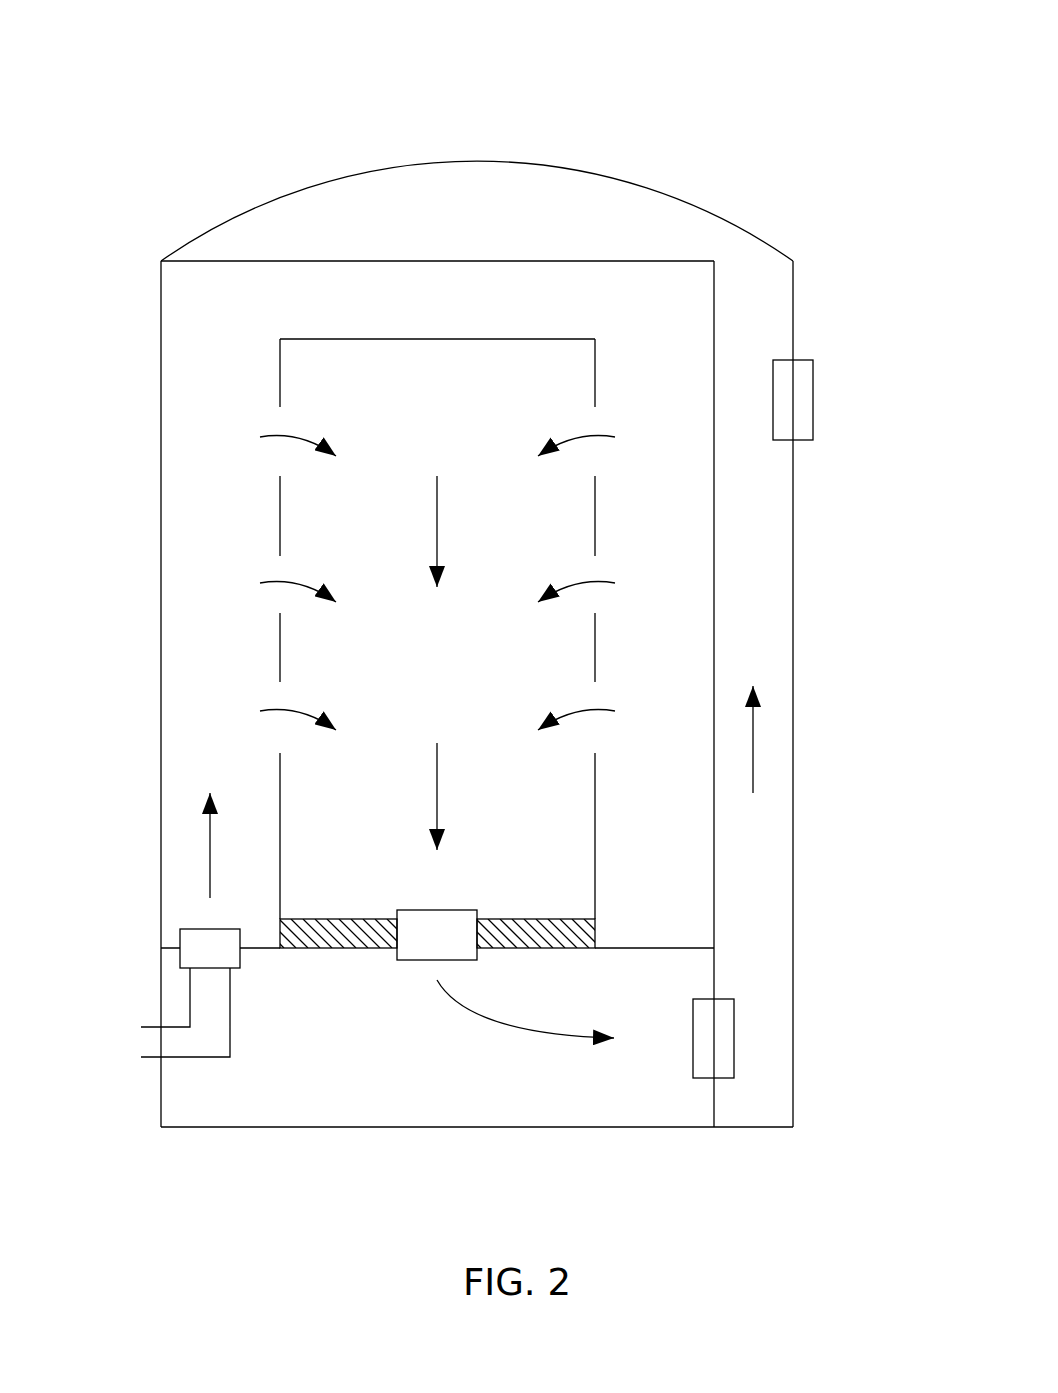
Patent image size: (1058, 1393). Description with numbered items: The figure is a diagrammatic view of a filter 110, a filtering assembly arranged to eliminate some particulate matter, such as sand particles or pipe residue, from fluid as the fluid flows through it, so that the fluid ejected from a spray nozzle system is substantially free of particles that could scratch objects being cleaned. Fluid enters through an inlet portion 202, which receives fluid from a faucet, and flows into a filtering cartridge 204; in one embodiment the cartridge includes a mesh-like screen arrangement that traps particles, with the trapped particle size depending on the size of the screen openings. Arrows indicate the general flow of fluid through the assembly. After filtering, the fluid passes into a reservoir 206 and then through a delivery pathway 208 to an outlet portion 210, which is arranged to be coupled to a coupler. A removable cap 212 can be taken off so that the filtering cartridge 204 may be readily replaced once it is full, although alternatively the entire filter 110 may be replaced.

The filter 110 is at (636, 122).
The inlet portion 202 is at (150, 1046).
The filtering cartridge 204 is at (300, 377).
The reservoir 206 is at (594, 1107).
The delivery pathway 208 is at (773, 518).
The outlet portion 210 is at (792, 400).
The removable cap 212 is at (735, 243).